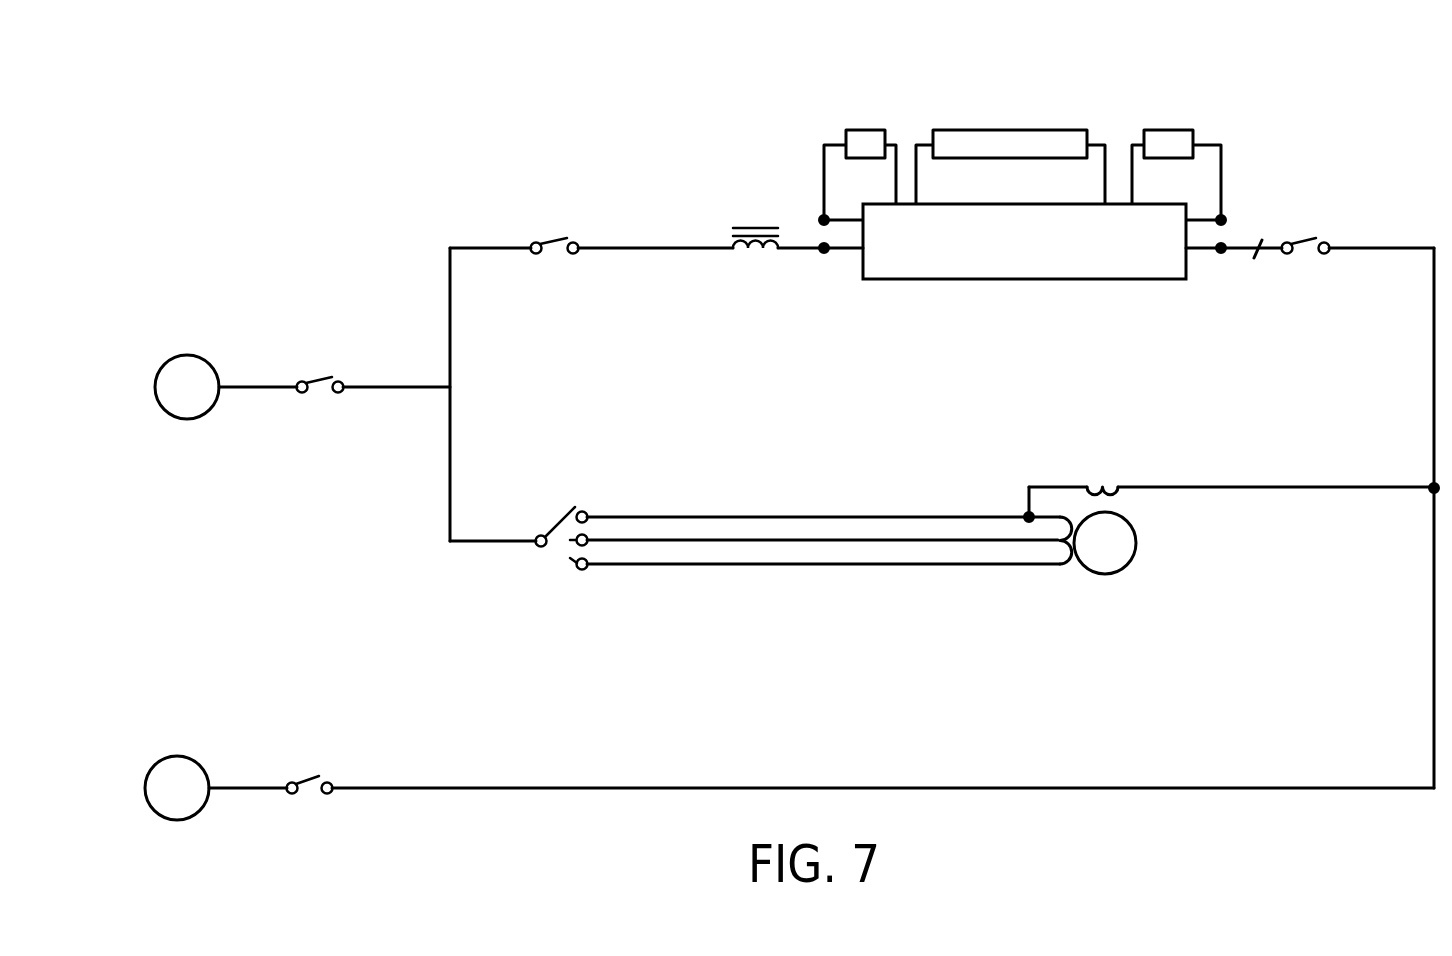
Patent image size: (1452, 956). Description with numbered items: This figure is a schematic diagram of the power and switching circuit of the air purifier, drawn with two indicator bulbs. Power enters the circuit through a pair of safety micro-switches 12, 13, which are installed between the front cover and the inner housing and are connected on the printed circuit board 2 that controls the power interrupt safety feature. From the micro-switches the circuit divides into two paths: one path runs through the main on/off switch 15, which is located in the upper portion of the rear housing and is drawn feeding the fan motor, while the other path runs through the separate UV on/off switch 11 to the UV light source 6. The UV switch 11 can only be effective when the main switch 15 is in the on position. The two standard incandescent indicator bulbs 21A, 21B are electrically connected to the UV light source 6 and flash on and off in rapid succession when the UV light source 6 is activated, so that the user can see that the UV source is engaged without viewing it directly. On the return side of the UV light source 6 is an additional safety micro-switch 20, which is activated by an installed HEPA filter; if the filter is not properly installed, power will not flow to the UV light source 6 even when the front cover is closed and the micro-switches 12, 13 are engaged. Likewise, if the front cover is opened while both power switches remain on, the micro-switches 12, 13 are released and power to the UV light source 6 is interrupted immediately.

The printed circuit board 2 is at (1067, 253).
The UV light source 6 is at (980, 138).
The UV on/off switch 11 is at (547, 241).
The micro-switch 12 is at (308, 381).
The micro-switch 13 is at (298, 782).
The main on/off switch 15 is at (553, 528).
The safety micro-switch 20 is at (1296, 240).
The indicator light bulb 21A is at (868, 130).
The indicator light bulb 21B is at (1173, 130).